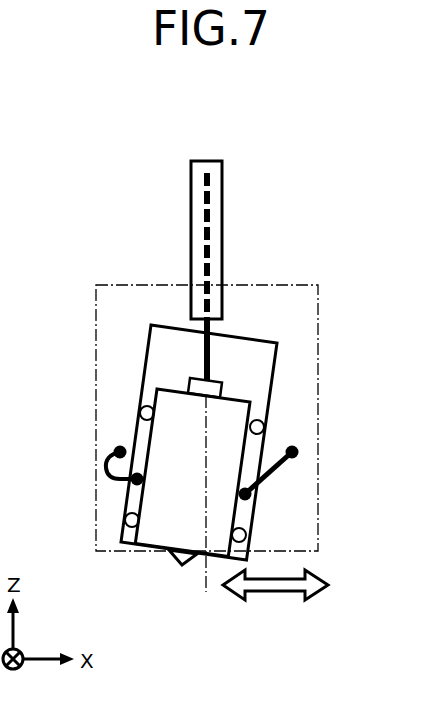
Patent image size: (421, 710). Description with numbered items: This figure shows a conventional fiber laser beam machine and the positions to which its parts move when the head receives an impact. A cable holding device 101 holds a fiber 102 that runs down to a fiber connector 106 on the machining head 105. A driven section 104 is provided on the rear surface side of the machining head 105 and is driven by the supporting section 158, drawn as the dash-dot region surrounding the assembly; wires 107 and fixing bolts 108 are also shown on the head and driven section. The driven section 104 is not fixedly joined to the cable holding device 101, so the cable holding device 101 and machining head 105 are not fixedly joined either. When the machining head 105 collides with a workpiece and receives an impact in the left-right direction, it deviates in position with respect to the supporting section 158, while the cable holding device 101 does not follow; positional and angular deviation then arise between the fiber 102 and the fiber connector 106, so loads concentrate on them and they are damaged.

The cable holding device 101 is at (206, 161).
The fiber 102 is at (208, 197).
The driven section 104 is at (253, 337).
The machining head 105 is at (172, 404).
The fiber connector 106 is at (223, 388).
The wires 107 is at (110, 476).
The fixing bolts 108 is at (255, 427).
The supporting section 158 is at (127, 285).